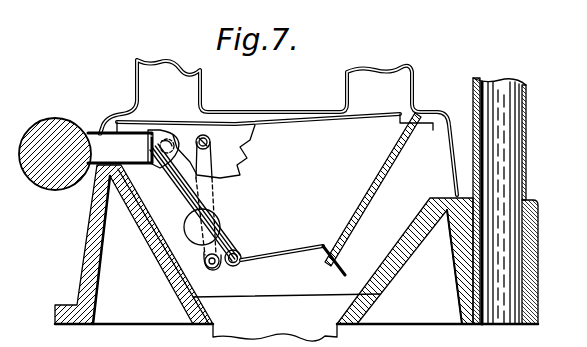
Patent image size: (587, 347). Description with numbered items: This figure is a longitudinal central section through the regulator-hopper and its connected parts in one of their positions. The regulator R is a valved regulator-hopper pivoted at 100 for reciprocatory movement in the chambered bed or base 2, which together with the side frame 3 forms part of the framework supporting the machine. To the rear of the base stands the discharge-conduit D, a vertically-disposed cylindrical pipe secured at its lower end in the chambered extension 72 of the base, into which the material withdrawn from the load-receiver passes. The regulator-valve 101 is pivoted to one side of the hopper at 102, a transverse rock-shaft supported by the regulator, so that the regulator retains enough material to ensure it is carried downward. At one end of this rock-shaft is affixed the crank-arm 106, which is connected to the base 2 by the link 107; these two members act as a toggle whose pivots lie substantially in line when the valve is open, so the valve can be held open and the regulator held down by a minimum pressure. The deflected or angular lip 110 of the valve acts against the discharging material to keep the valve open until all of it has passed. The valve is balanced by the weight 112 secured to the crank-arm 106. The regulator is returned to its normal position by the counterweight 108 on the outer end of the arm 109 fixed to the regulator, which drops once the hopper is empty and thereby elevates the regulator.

The chambered bed or base 2 is at (85, 238).
The side frame 3 is at (385, 82).
The chambered extension 72 is at (538, 226).
The pivot 100 is at (165, 138).
The regulator-valve 101 is at (290, 255).
The pivot of the regulator-valve 102 is at (262, 267).
The crank-arm 106 is at (208, 270).
The link 107 is at (208, 158).
The counterweight 108 is at (45, 122).
The arm 109 is at (100, 142).
The lip of the regulator-valve 110 is at (341, 268).
The weight 112 is at (190, 218).
The discharge-conduit D is at (527, 123).
The regulator R is at (334, 183).